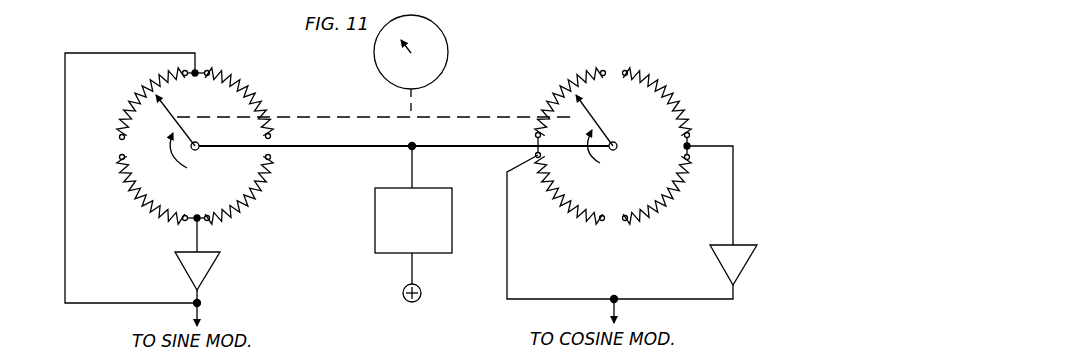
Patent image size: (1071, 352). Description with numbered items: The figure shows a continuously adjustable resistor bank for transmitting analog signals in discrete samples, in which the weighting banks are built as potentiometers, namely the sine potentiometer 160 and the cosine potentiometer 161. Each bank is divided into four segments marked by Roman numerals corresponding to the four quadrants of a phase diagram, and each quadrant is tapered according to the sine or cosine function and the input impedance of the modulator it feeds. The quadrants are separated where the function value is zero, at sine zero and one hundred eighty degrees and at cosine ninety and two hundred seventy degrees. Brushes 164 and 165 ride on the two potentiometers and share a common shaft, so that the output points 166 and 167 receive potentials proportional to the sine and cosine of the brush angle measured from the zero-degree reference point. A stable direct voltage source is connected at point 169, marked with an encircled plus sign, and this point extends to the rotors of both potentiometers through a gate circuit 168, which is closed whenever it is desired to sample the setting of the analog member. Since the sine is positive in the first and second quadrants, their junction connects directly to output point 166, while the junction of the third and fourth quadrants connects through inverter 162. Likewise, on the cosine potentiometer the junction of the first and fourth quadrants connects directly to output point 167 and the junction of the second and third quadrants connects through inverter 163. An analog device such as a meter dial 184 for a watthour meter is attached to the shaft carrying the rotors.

The sine potentiometer 160 is at (114, 108).
The cosine potentiometer 161 is at (714, 101).
The inverter 162 is at (208, 266).
The inverter 163 is at (716, 260).
The brush 164 is at (171, 110).
The brush 165 is at (591, 110).
The output point 166 is at (204, 303).
The output point 167 is at (616, 295).
The gate circuit 168 is at (452, 219).
The point 169 is at (421, 294).
The meter dial 184 is at (448, 47).